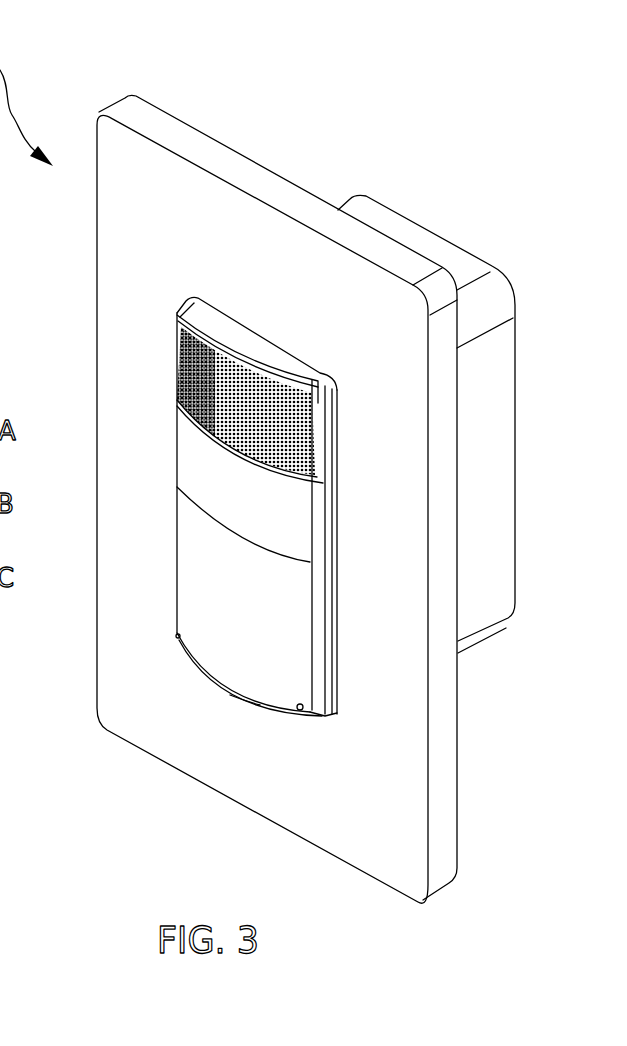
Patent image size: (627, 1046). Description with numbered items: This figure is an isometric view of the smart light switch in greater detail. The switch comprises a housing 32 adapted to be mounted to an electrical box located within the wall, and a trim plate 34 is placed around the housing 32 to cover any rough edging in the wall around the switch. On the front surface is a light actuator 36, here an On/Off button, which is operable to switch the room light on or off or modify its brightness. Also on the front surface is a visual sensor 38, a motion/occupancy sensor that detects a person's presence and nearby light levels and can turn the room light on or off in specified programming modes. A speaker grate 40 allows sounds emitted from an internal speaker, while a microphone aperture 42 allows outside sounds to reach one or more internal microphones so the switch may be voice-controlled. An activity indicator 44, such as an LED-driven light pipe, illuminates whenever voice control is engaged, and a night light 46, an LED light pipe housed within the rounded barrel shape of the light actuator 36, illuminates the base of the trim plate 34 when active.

The housing 32 is at (492, 583).
The trim plate 34 is at (443, 853).
The light actuator 36 is at (258, 620).
The visual sensor 38 is at (258, 515).
The speaker grate 40 is at (177, 373).
The microphone aperture 42 is at (298, 710).
The activity indicator 44 is at (308, 410).
The night light 46 is at (238, 713).